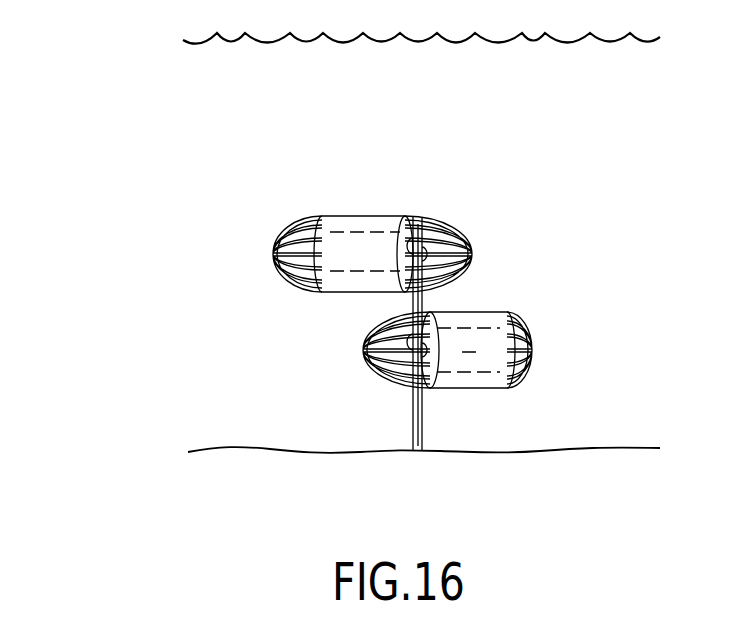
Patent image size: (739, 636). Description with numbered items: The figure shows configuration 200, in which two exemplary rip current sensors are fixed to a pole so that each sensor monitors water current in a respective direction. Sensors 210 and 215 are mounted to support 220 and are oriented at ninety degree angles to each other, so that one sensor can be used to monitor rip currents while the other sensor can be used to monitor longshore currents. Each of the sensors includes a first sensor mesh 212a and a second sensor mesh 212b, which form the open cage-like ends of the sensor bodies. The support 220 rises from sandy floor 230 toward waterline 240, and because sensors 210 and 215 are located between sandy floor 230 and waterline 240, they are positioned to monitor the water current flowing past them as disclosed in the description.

The configuration 200 is at (120, 123).
The sensor 210 is at (415, 268).
The first sensor mesh 212a is at (458, 227).
The second sensor mesh 212b is at (523, 328).
The sensor 215 is at (410, 302).
The support 220 is at (421, 410).
The sandy floor 230 is at (545, 452).
The waterline 240 is at (563, 43).